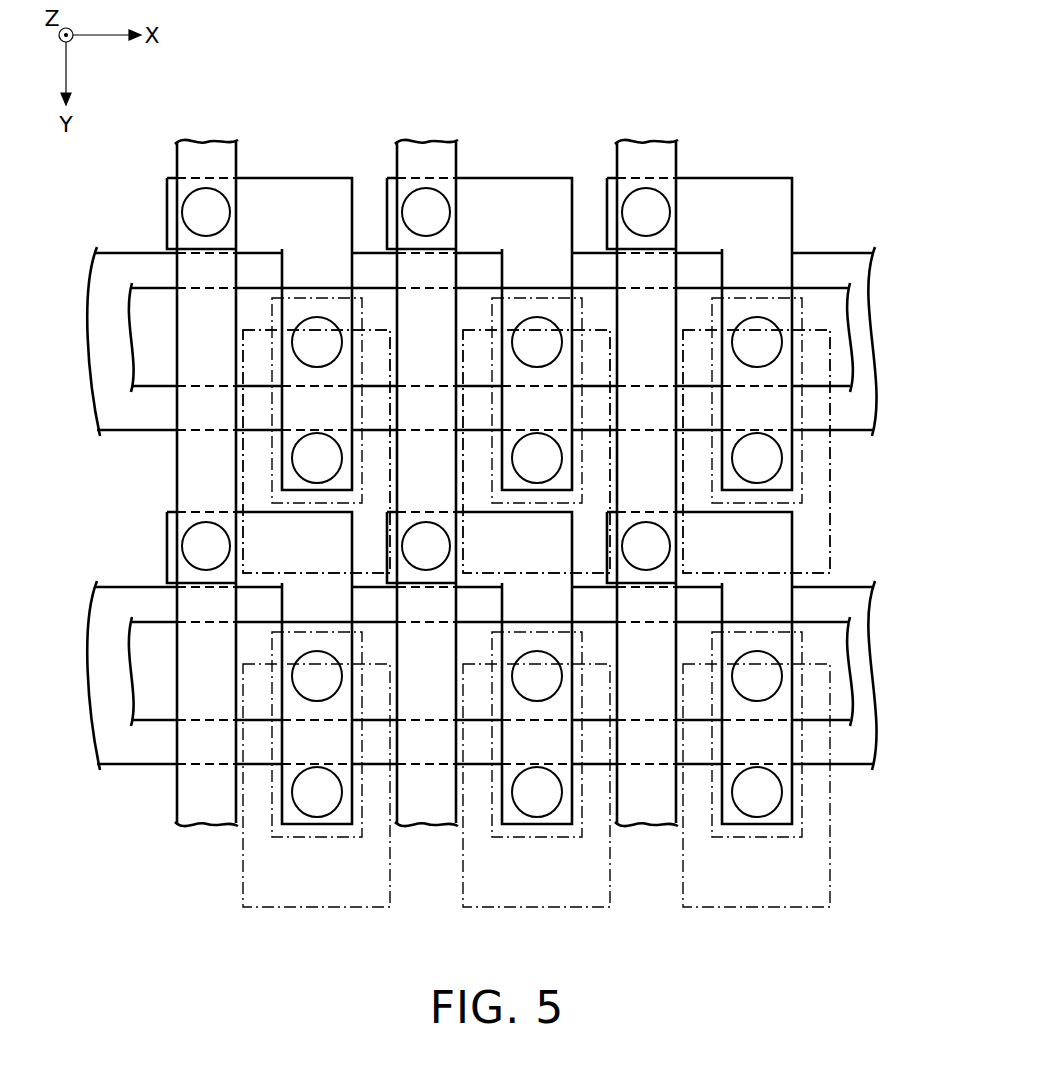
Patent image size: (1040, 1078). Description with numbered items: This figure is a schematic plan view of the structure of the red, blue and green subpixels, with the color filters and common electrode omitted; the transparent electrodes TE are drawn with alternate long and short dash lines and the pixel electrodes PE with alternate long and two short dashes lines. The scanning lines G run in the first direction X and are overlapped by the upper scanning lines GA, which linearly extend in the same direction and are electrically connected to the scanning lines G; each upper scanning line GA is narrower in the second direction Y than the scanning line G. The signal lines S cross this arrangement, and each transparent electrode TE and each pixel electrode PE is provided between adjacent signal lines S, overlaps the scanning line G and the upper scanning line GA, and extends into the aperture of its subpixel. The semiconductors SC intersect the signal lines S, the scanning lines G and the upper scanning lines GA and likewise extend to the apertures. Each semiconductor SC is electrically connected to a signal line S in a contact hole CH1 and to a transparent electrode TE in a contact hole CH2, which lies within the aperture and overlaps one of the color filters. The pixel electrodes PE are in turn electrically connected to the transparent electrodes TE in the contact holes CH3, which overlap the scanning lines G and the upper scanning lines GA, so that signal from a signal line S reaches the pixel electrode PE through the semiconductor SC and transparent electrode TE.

The scanning line G is at (897, 607).
The upper scanning line GA is at (897, 679).
The signal line S is at (665, 145).
The semiconductor SC is at (285, 177).
The transparent electrode TE is at (753, 297).
The pixel electrode PE is at (832, 328).
The contact hole CH1 is at (645, 200).
The contact hole CH2 is at (757, 473).
The contact hole CH3 is at (740, 347).